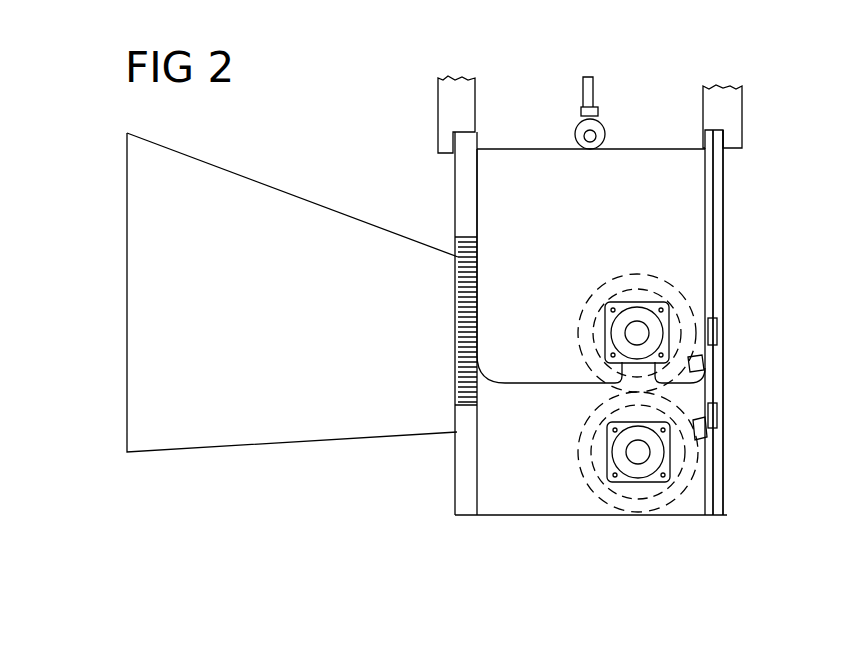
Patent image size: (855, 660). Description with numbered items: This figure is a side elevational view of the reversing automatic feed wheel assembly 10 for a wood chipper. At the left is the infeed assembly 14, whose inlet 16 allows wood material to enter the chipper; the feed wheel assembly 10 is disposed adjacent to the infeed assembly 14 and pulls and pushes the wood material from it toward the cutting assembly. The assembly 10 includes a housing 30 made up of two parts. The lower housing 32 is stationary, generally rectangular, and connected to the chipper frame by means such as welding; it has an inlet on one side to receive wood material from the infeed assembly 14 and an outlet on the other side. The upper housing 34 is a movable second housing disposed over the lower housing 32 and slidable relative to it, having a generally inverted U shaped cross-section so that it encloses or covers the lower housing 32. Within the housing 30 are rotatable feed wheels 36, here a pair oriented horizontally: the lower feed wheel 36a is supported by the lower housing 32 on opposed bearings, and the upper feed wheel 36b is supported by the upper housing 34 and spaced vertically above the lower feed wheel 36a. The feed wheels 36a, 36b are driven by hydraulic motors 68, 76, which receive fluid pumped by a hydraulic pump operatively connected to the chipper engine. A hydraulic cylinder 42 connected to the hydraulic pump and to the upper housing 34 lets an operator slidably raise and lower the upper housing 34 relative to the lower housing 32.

The reversing automatic feed wheel assembly 10 is at (388, 67).
The infeed assembly 14 is at (313, 196).
The inlet 16 is at (127, 233).
The housing 30 is at (664, 142).
The lower housing 32 is at (568, 507).
The upper housing 34 is at (528, 165).
The feed wheels 36 is at (724, 406).
The lower feed wheel 36a is at (726, 440).
The upper feed wheel 36b is at (716, 335).
The hydraulic cylinder 42 is at (592, 120).
The hydraulic motor 68 is at (655, 462).
The hydraulic motor 76 is at (645, 331).